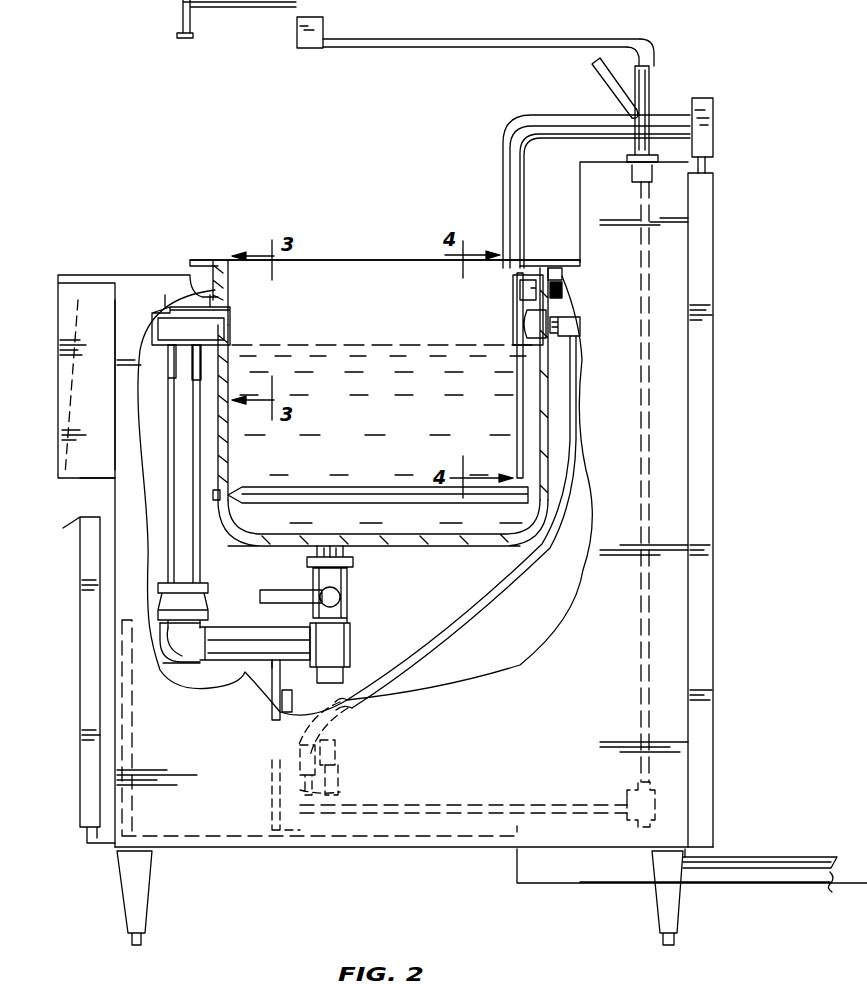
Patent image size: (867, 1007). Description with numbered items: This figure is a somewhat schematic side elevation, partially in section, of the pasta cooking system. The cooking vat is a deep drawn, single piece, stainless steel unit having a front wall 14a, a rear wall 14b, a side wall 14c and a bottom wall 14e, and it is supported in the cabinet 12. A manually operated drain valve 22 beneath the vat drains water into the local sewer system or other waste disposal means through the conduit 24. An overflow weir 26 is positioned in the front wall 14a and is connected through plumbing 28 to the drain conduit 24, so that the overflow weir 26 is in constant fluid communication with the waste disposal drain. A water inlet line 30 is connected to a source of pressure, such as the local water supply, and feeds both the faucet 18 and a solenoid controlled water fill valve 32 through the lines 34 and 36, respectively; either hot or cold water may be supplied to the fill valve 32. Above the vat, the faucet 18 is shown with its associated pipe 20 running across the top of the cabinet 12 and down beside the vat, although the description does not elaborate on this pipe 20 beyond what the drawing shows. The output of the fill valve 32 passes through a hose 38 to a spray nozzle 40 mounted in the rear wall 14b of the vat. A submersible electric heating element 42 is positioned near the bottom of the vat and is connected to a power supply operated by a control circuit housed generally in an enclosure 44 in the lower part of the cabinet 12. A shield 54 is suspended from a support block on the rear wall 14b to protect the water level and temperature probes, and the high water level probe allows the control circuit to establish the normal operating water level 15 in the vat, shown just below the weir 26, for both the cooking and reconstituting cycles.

The cabinet 12 is at (115, 490).
The front wall 14a is at (228, 372).
The rear wall 14b is at (550, 411).
The side wall 14c is at (362, 270).
The bottom wall 14e is at (456, 546).
The normal operating water level 15 is at (360, 344).
The faucet 18 is at (647, 50).
The supply pipe 20 is at (500, 125).
The drain valve 22 is at (350, 584).
The conduit 24 is at (348, 706).
The overflow weir 26 is at (213, 333).
The plumbing 28 is at (177, 442).
The water inlet line 30 is at (760, 853).
The water fill valve 32 is at (340, 770).
The line 34 is at (642, 652).
The line 36 is at (520, 806).
The hose 38 is at (458, 634).
The spray nozzle 40 is at (560, 310).
The electric heating element 42 is at (302, 488).
The enclosure 44 is at (247, 684).
The shield 54 is at (510, 328).